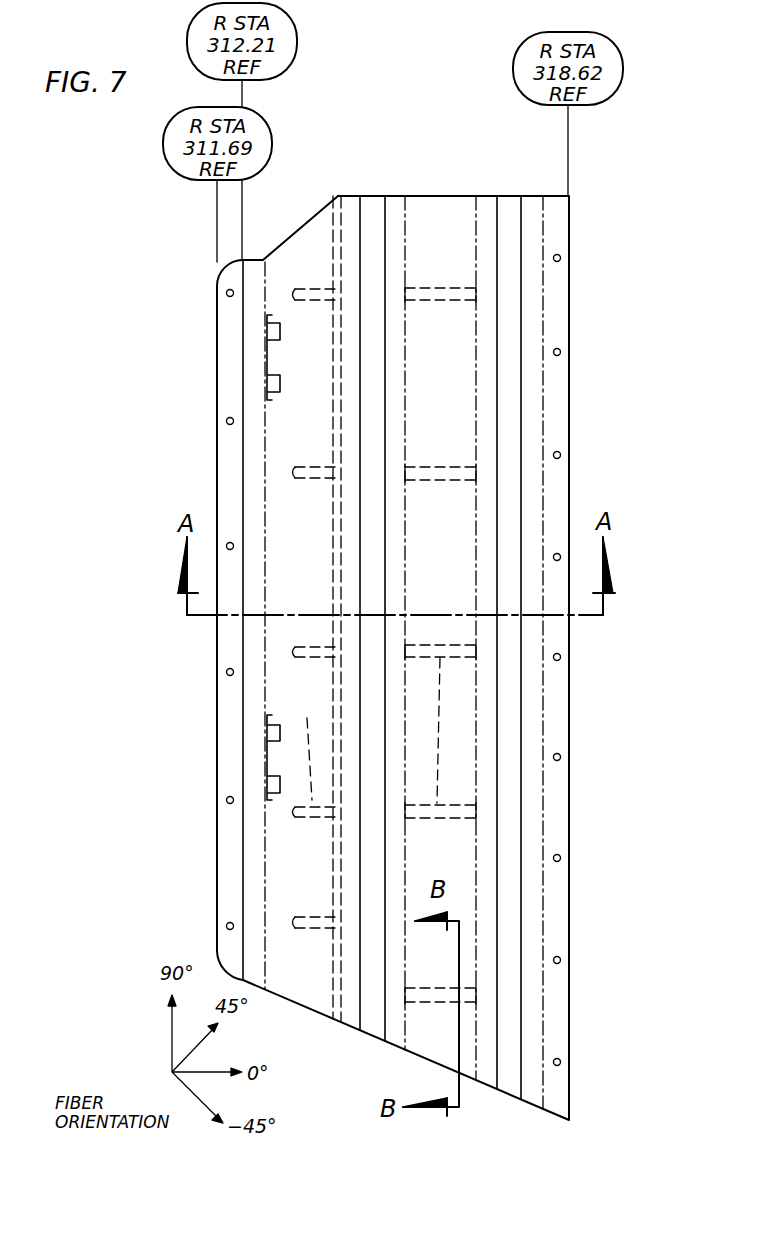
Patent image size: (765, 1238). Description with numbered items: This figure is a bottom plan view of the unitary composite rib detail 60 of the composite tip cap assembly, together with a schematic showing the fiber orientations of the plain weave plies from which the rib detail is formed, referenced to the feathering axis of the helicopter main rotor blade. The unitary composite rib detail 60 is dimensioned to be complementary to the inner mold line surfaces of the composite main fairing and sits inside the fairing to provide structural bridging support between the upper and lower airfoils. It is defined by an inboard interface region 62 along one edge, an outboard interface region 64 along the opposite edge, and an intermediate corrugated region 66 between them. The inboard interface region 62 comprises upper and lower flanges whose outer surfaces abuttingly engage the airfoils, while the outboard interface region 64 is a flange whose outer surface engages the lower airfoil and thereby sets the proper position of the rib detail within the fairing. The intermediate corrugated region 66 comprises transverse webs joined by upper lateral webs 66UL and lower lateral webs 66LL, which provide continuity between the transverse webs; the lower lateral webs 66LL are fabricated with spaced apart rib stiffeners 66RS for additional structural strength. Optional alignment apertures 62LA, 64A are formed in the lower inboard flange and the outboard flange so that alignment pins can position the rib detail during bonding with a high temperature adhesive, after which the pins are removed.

The unitary composite rib detail 60 is at (456, 392).
The inboard interface region 62 is at (122, 255).
The alignment aperture 62LA is at (226, 673).
The outboard interface region 64 is at (640, 192).
The alignment aperture 64A is at (561, 657).
The intermediate corrugated region 66 is at (535, 178).
The upper lateral webs 66UL is at (512, 212).
The lower lateral webs 66LL is at (446, 257).
The rib stiffeners 66RS is at (322, 716).